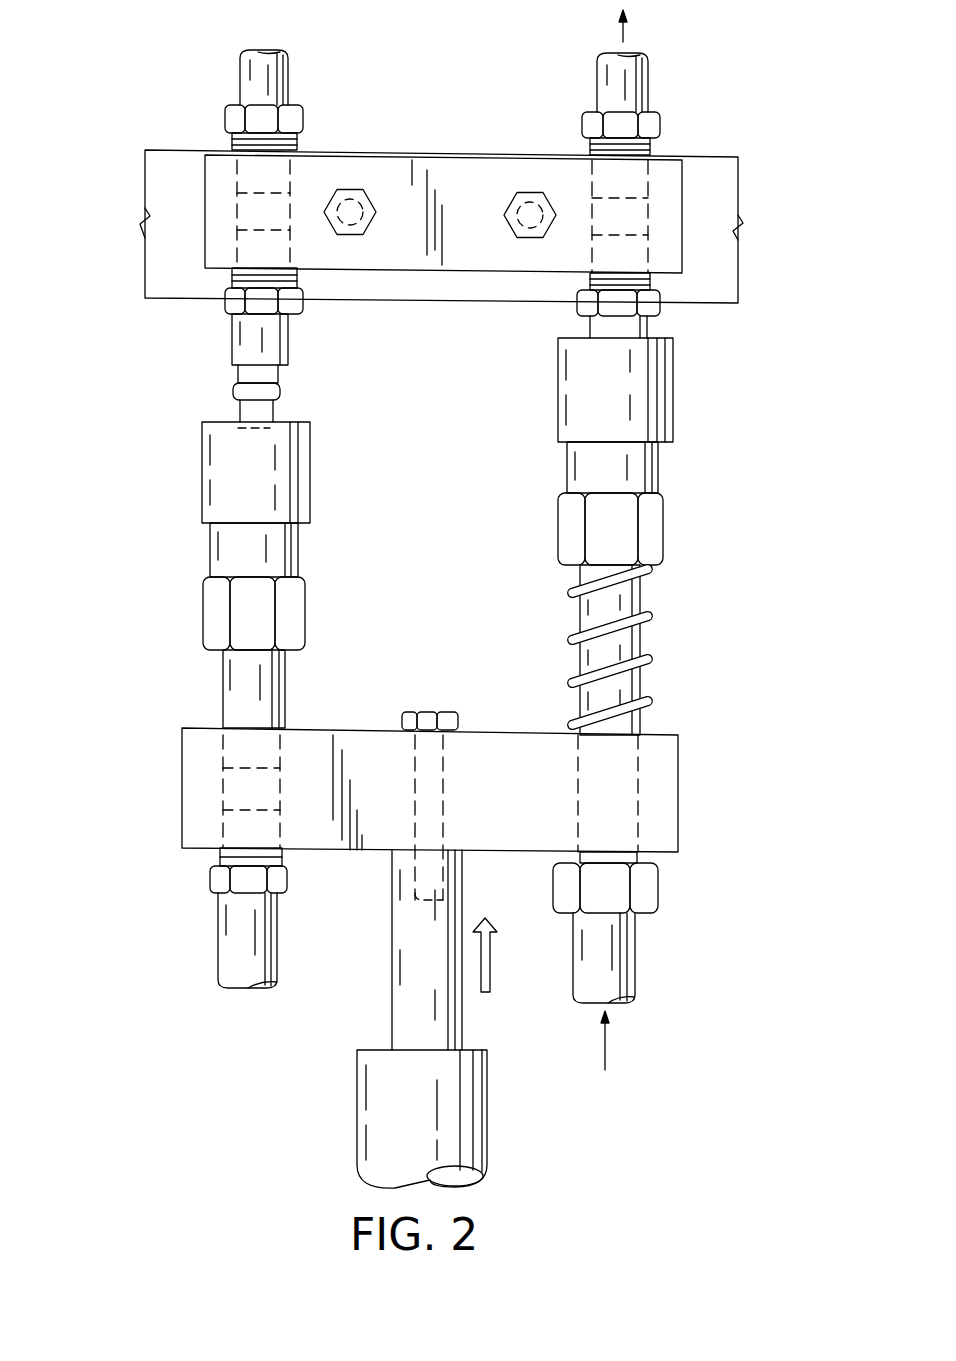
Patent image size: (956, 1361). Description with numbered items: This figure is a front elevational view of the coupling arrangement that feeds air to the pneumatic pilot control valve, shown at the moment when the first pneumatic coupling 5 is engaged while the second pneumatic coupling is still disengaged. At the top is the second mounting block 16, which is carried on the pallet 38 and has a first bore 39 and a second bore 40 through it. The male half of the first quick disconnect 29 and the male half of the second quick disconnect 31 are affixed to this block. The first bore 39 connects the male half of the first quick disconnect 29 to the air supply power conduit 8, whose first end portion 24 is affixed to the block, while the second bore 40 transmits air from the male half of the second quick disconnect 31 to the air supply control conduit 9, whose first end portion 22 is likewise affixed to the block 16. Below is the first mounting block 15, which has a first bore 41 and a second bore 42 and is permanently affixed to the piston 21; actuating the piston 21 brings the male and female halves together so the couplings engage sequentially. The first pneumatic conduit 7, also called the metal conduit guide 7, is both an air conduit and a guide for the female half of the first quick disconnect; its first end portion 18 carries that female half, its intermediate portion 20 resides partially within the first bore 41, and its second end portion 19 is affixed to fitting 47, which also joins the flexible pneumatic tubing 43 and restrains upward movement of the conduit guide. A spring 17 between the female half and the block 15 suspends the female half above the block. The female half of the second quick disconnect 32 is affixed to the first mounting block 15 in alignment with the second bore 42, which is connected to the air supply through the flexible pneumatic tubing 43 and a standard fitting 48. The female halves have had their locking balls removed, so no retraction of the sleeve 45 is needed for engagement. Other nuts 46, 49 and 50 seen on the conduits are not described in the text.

The first pneumatic coupling 5 is at (683, 432).
The first pneumatic conduit 7 is at (645, 640).
The air supply power conduit 8 is at (650, 70).
The air supply control conduit 9 is at (238, 63).
The first mounting block 15 is at (683, 788).
The second mounting block 16 is at (683, 185).
The spring 17 is at (648, 617).
The first end portion of the metal conduit guide 18 is at (585, 572).
The second end portion of the metal conduit guide 19 is at (640, 858).
The intermediate portion of the metal conduit guide 20 is at (630, 688).
The piston 21 is at (393, 1003).
The first end portion of the air supply control conduit 22 is at (290, 72).
The first end portion of the air supply power conduit 24 is at (603, 90).
The male half of the first quick disconnect 29 is at (648, 327).
The male half of the second quick disconnect 31 is at (290, 345).
The female half of the second quick disconnect 32 is at (300, 547).
The pallet 38 is at (720, 250).
The first bore 39 is at (640, 214).
The second bore 40 is at (240, 215).
The first bore 41 is at (630, 770).
The second bore 42 is at (228, 790).
The flexible pneumatic tubing 43 is at (228, 948).
The sleeve 45 is at (675, 385).
The block 46 is at (203, 500).
The fitting 47 is at (648, 895).
The standard fitting 48 is at (212, 882).
The nut 49 is at (657, 125).
The nut 50 is at (302, 118).